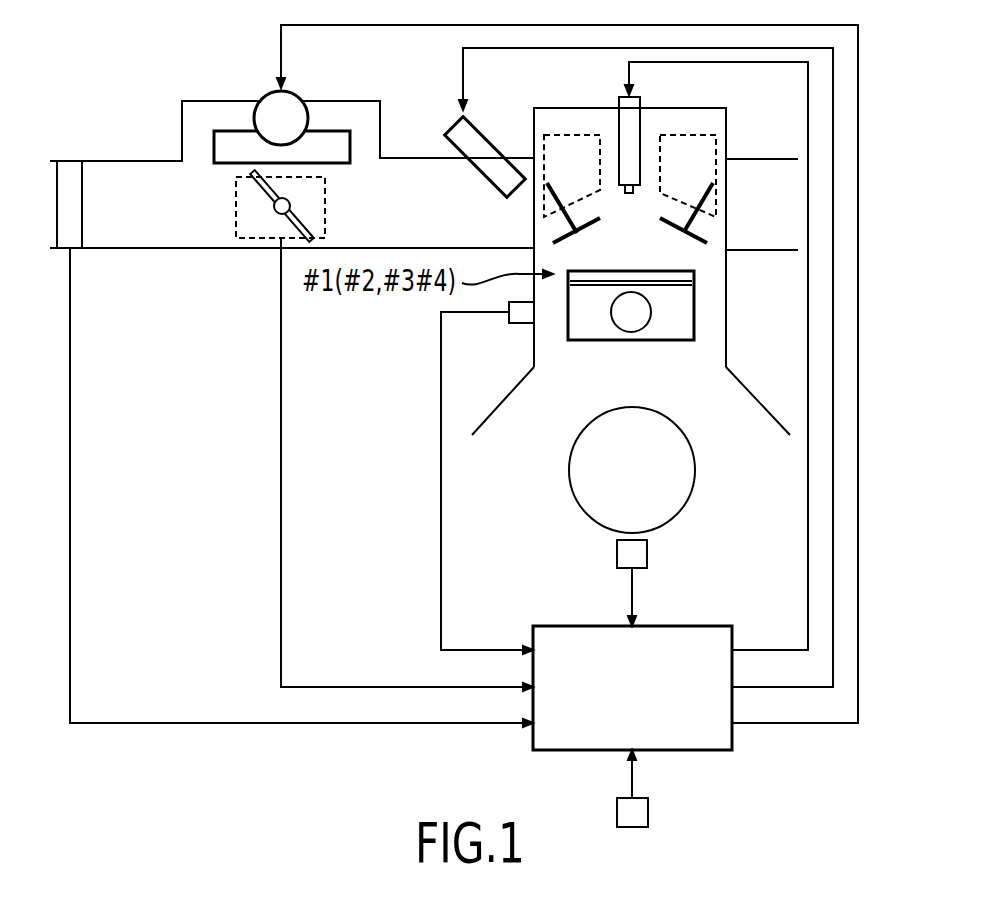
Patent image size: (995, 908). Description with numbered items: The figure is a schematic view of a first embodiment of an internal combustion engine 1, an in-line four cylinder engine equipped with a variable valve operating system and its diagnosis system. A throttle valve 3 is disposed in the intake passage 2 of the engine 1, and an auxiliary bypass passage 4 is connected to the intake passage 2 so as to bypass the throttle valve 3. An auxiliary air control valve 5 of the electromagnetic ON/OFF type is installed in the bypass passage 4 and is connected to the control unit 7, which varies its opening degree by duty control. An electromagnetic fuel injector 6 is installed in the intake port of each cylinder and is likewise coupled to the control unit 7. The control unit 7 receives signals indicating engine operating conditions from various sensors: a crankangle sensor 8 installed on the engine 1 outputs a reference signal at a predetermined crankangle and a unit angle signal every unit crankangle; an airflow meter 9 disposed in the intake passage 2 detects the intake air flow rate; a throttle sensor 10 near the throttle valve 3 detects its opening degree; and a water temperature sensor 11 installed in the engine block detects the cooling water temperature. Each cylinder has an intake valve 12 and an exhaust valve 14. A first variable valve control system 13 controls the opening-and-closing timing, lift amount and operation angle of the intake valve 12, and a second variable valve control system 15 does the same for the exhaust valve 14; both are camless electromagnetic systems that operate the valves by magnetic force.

The internal combustion engine 1 is at (745, 133).
The intake passage 2 is at (162, 160).
The throttle valve 3 is at (257, 185).
The auxiliary bypass passage 4 is at (202, 101).
The auxiliary air control valve 5 is at (270, 93).
The fuel injector 6 is at (478, 128).
The control unit 7 is at (577, 625).
The crankangle sensor 8 is at (647, 550).
The airflow meter 9 is at (82, 187).
The throttle sensor 10 is at (262, 240).
The water temperature sensor 11 is at (522, 323).
The intake valve 12 is at (568, 240).
The first variable valve control system 13 is at (573, 135).
The exhaust valve 14 is at (692, 240).
The second variable valve control system 15 is at (676, 135).